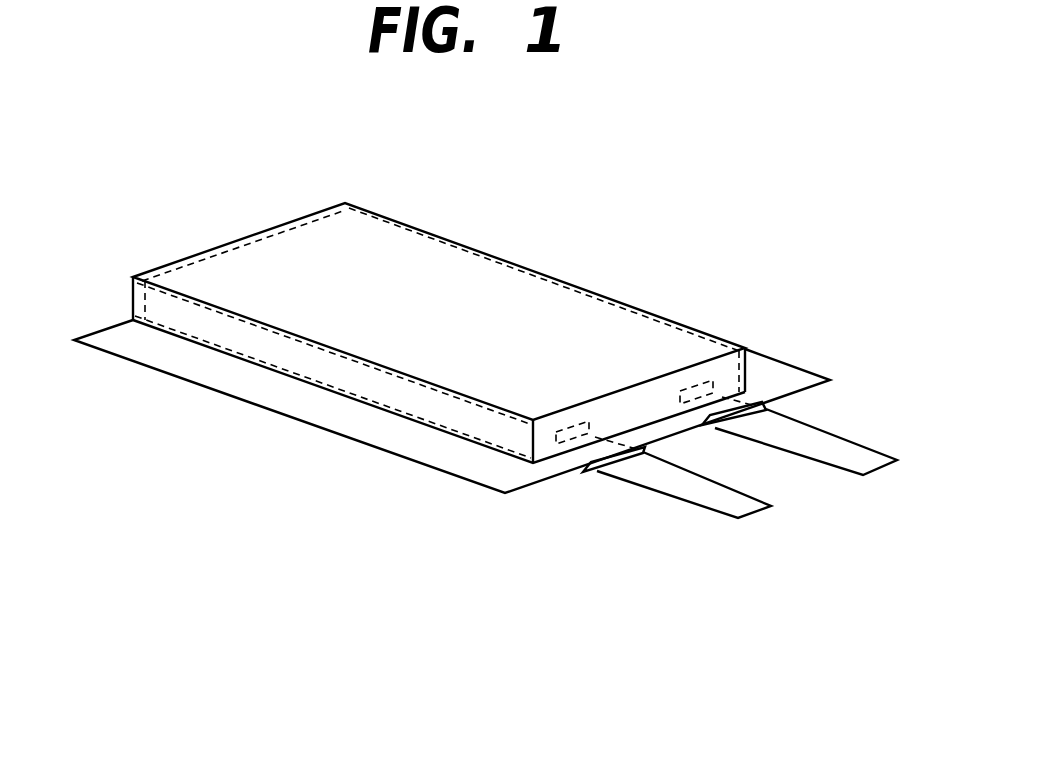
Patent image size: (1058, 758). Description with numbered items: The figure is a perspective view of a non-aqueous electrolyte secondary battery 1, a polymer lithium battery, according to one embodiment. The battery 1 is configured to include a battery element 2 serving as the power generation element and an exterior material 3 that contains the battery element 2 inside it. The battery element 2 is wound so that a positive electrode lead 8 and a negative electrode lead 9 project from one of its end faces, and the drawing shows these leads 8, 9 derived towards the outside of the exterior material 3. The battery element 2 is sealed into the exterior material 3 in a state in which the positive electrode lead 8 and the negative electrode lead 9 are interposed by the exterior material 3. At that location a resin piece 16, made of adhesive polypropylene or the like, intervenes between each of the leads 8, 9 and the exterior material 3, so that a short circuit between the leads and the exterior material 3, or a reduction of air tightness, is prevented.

The non-aqueous electrolyte secondary battery 1 is at (273, 165).
The battery element 2 is at (458, 297).
The exterior material 3 is at (773, 378).
The positive electrode lead 8 is at (857, 458).
The negative electrode lead 9 is at (740, 505).
The resin piece 16 is at (595, 475).